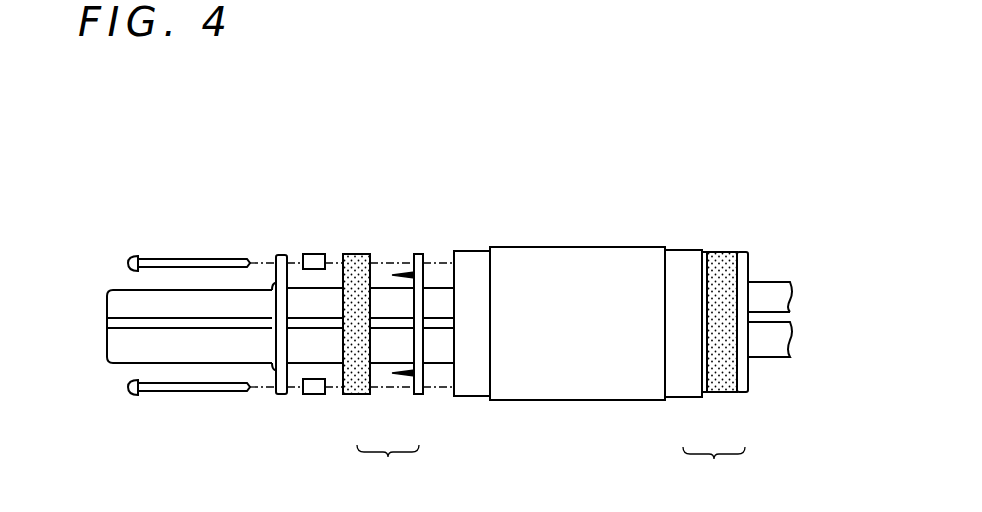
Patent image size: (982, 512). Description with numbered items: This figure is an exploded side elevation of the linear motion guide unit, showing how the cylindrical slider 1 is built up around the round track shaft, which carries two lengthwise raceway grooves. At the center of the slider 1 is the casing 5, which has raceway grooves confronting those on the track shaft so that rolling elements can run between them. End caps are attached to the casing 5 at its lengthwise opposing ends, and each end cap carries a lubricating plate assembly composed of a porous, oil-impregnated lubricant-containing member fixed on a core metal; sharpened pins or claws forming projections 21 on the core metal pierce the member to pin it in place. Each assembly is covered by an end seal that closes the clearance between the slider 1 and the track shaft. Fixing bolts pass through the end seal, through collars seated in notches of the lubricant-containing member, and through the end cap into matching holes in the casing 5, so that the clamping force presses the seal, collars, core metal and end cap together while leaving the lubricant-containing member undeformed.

The slider 1 is at (528, 242).
The casing 5 is at (590, 268).
The projections 21 is at (400, 273).